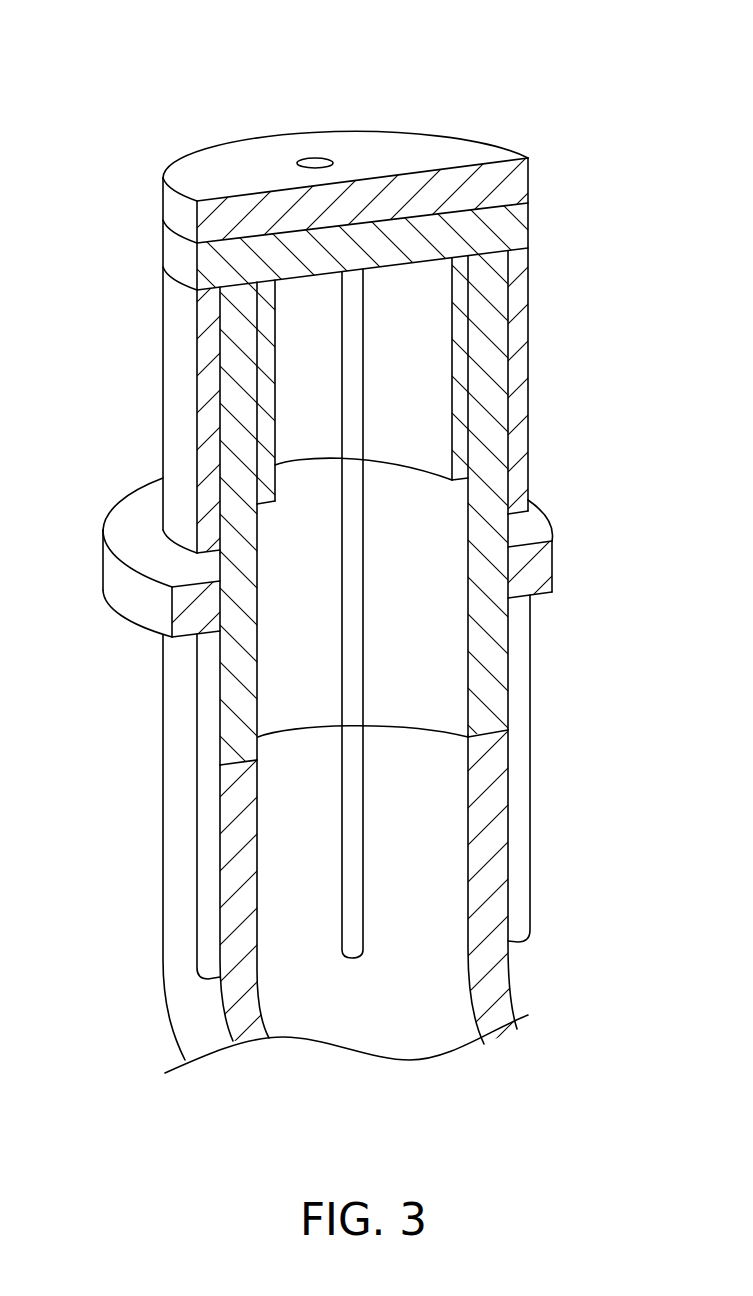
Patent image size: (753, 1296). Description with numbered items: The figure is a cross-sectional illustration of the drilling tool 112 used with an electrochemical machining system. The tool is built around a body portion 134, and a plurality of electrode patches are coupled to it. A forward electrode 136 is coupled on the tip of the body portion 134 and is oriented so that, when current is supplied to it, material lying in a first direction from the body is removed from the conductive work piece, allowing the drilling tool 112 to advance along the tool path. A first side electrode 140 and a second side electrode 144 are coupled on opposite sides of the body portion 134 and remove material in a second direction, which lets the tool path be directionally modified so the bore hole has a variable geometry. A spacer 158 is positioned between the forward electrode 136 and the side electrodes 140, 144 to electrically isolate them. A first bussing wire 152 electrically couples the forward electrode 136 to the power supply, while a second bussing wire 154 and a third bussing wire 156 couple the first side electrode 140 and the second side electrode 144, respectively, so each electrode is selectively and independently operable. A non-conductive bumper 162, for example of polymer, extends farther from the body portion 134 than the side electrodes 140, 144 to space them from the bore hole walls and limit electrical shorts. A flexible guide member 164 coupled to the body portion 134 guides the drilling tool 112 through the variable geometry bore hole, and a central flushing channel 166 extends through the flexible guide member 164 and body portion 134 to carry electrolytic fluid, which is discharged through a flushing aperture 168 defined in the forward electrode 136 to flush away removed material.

The drilling tool 112 is at (442, 87).
The forward electrode 136 is at (228, 150).
The flushing aperture 168 is at (318, 160).
The spacer 158 is at (530, 213).
The first side electrode 140 is at (170, 322).
The second side electrode 144 is at (530, 278).
The body portion 134 is at (488, 647).
The non-conductive bumper 162 is at (532, 567).
The first bussing wire 152 is at (365, 823).
The third bussing wire 156 is at (528, 743).
The second bussing wire 154 is at (200, 914).
The flexible guide member 164 is at (497, 965).
The central flushing channel 166 is at (386, 998).